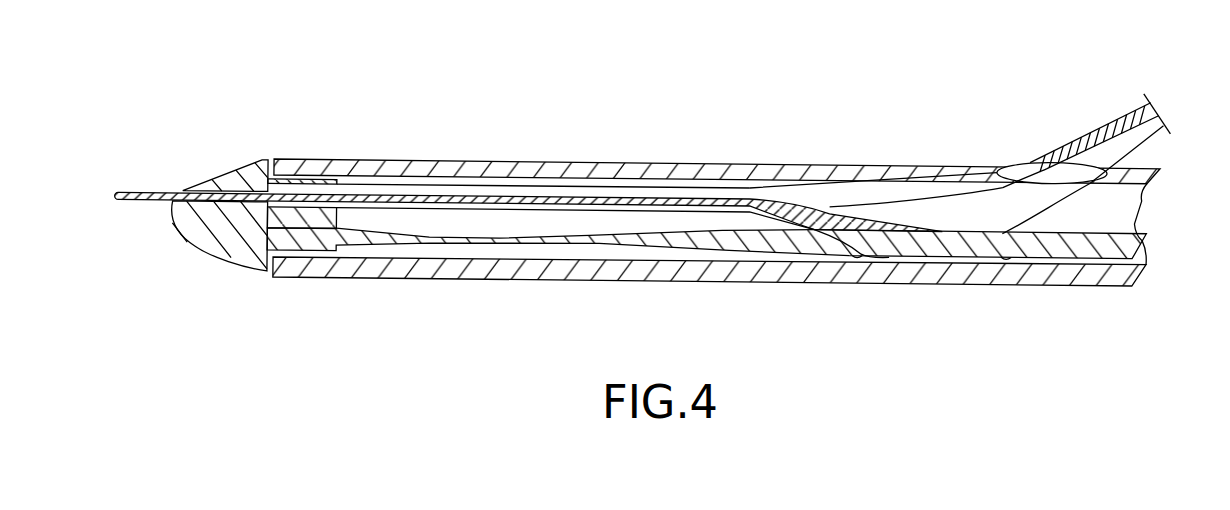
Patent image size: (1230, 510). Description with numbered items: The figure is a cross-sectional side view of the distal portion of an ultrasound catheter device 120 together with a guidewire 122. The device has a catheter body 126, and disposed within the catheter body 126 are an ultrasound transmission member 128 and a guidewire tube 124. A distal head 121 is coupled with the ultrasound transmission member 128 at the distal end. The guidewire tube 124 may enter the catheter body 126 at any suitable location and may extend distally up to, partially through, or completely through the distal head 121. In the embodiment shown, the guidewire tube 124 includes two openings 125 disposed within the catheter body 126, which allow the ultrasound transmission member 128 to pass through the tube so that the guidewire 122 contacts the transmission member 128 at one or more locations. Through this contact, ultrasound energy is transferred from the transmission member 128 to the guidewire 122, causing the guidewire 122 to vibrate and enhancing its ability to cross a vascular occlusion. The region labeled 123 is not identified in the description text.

The ultrasound catheter device 120 is at (535, 84).
The distal head 121 is at (222, 172).
The guidewire 122 is at (748, 200).
The crossing region 123 is at (923, 234).
The guidewire tube 124 is at (1030, 157).
The opening 125 is at (858, 258).
The catheter body 126 is at (461, 160).
The ultrasound transmission member 128 is at (531, 243).